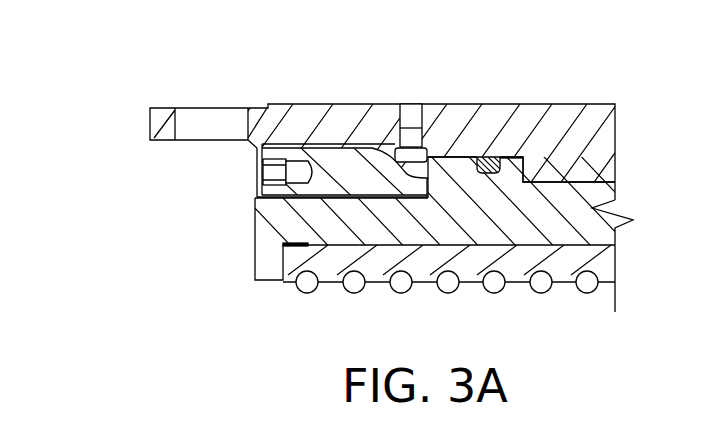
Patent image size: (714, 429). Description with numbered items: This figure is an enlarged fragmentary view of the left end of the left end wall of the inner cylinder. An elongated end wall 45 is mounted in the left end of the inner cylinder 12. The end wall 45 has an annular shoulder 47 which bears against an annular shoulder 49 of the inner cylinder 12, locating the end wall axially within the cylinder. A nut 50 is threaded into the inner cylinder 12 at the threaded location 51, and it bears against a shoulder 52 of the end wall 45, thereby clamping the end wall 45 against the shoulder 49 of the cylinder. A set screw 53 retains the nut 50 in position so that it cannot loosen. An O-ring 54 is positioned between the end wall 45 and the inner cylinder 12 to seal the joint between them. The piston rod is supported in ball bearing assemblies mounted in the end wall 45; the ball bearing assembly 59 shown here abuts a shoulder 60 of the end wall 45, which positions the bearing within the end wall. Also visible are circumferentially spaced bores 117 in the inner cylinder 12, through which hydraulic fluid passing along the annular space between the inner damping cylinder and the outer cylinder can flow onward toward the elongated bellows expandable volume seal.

The inner cylinder 12 is at (617, 141).
The end wall 45 is at (617, 232).
The annular shoulder 47 is at (550, 181).
The annular shoulder 49 is at (520, 169).
The nut 50 is at (259, 170).
The threaded location 51 is at (303, 140).
The shoulder 52 is at (381, 151).
The set screw 53 is at (411, 108).
The O-ring 54 is at (488, 158).
The ball bearing assembly 59 is at (495, 293).
The shoulder 60 is at (290, 262).
The bores 117 is at (207, 120).